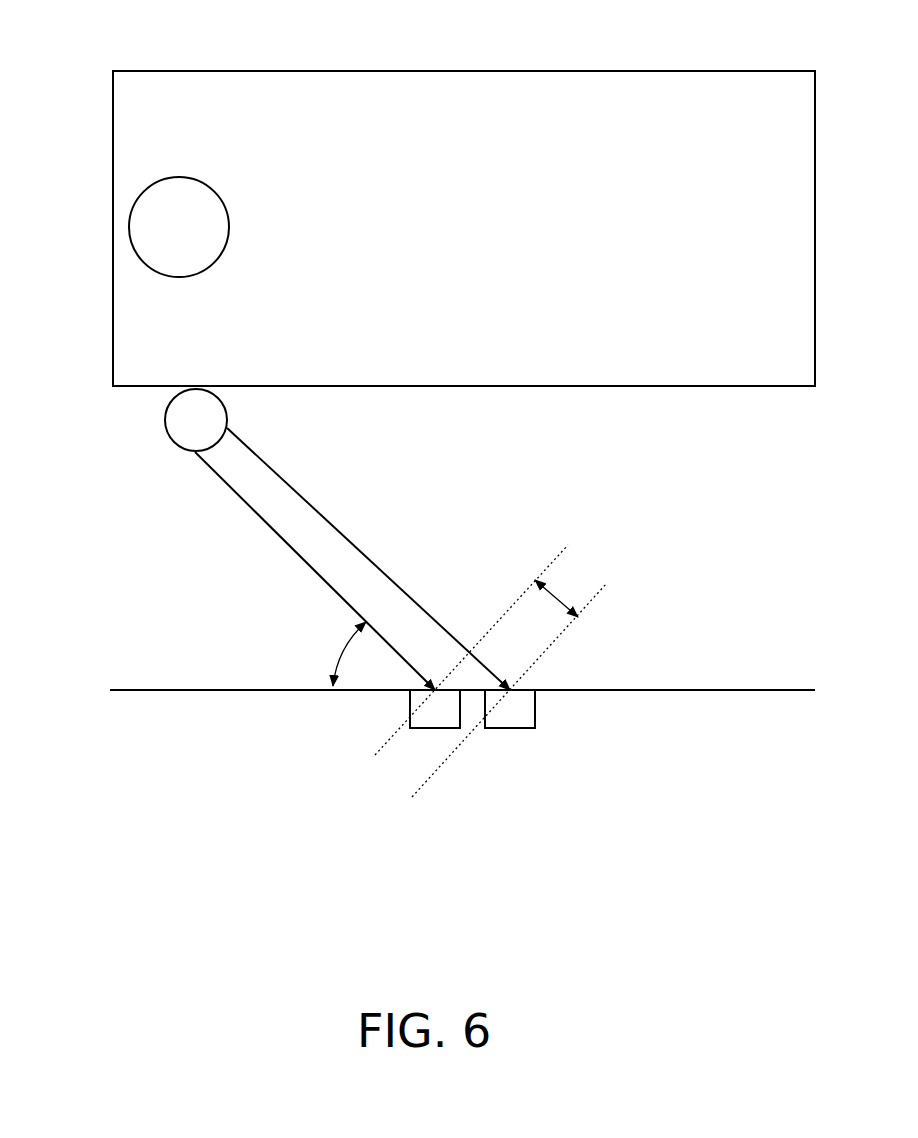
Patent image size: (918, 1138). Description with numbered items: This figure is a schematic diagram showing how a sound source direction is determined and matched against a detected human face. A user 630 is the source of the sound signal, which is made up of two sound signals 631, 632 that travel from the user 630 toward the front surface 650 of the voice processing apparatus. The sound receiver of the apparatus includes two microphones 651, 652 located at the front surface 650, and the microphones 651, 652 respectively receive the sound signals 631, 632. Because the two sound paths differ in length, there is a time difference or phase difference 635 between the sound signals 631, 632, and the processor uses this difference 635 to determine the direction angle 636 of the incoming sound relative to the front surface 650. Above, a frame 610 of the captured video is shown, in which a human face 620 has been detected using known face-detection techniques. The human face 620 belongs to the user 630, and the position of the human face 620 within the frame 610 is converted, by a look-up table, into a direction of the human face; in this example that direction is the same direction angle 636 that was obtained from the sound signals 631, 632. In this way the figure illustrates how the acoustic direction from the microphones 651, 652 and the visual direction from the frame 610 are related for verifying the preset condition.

The frame 610 is at (356, 70).
The human face 620 is at (229, 227).
The user 630 is at (165, 420).
The sound signal 631 is at (267, 528).
The sound signal 632 is at (310, 508).
The time difference or phase difference 635 is at (496, 671).
The direction angle 636 is at (319, 654).
The front surface 650 is at (178, 689).
The microphone 651 is at (410, 705).
The microphone 652 is at (535, 707).